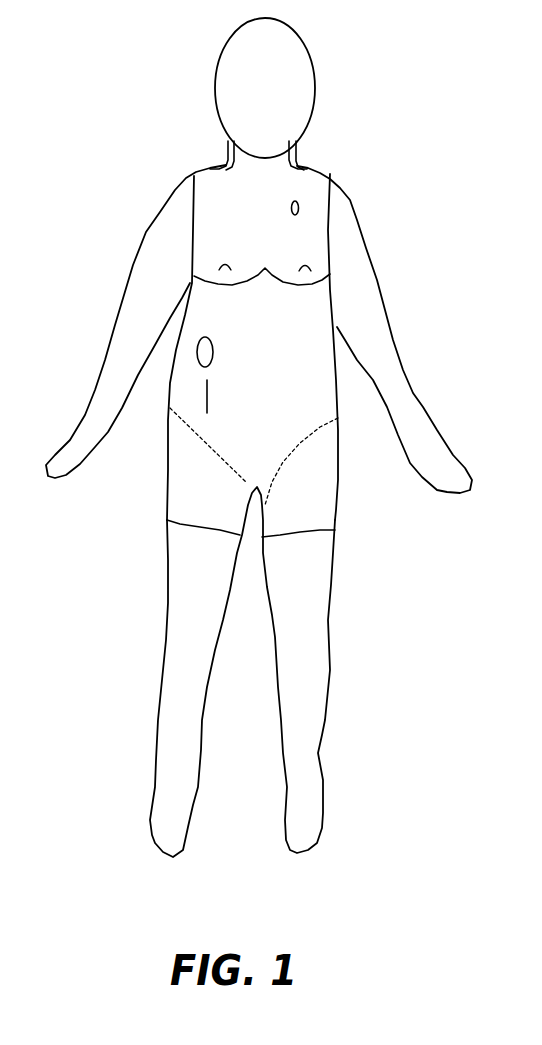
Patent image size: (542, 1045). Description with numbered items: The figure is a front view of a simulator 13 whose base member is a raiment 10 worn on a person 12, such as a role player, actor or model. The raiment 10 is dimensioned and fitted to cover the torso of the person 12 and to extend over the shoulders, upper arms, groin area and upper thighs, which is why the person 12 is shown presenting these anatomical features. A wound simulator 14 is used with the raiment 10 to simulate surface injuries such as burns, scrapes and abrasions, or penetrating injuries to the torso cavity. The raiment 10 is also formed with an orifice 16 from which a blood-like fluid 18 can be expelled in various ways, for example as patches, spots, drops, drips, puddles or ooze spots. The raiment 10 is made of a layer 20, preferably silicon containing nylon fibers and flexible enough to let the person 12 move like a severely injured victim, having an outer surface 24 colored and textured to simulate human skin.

The raiment 10 is at (224, 320).
The person 12 is at (384, 329).
The simulator 13 is at (174, 258).
The wound simulator 14 is at (116, 355).
The orifice 16 is at (213, 216).
The blood-like fluid 18 is at (147, 457).
The layer 20 is at (287, 456).
The outer surface 24 is at (281, 527).